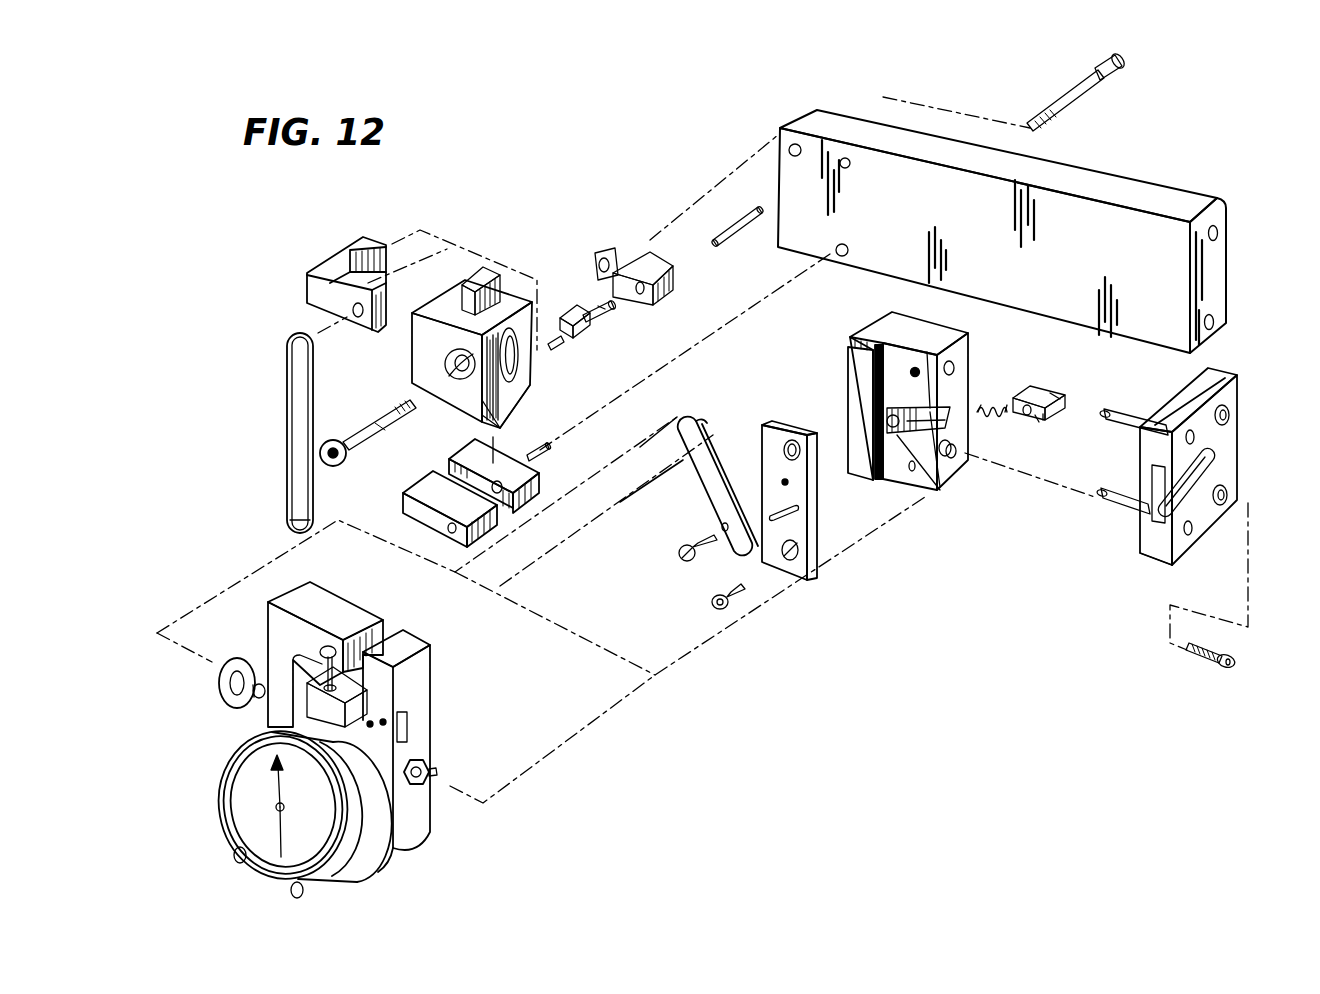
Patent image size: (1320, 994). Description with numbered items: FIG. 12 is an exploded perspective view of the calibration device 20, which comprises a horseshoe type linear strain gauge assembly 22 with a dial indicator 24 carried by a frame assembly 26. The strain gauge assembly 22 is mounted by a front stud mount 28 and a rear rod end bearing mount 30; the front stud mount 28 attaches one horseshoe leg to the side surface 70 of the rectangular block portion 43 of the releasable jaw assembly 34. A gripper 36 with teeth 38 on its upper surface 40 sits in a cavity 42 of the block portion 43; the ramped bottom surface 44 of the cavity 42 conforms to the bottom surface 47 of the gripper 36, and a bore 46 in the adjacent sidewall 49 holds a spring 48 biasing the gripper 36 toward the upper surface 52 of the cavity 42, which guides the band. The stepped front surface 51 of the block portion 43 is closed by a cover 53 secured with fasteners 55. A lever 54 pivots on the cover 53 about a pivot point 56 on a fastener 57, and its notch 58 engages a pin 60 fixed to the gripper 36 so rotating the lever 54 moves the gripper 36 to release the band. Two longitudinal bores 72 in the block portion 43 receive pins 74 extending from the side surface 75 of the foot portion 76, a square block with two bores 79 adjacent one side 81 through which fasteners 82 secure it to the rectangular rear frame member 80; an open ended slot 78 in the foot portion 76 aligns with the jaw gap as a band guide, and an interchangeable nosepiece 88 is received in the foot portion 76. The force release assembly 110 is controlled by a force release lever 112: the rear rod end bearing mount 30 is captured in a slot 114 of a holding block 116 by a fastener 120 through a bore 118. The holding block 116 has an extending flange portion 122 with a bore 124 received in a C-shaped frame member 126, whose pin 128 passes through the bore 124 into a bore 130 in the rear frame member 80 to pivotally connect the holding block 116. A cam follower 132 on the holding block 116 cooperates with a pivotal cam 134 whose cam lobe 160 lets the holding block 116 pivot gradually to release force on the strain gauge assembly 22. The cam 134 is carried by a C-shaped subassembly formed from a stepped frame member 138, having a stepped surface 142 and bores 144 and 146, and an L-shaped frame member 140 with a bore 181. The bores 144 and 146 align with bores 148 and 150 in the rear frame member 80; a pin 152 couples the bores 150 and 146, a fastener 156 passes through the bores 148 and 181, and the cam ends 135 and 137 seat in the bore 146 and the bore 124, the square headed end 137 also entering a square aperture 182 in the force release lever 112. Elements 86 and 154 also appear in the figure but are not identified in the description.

The calibration device 20 is at (1115, 120).
The strain gauge assembly 22 is at (345, 610).
The dial indicator 24 is at (258, 862).
The frame assembly 26 is at (1086, 160).
The front stud mount 28 is at (432, 775).
The rear rod end bearing mount 30 is at (220, 690).
The releasable jaw assembly 34 is at (923, 537).
The gripper 36 is at (1037, 424).
The teeth 38 is at (1057, 397).
The upper surface 40 is at (1047, 414).
The cavity 42 is at (946, 458).
The block portion 43 is at (904, 406).
The bottom surface 44 is at (907, 440).
The bore 46 is at (888, 416).
The bottom surface 47 is at (1043, 420).
The spring 48 is at (994, 407).
The sidewall 49 is at (863, 470).
The front surface 51 is at (893, 470).
The upper surface 52 is at (919, 370).
The cover 53 is at (773, 522).
The lever 54 is at (705, 508).
The fasteners 55 is at (713, 606).
The pivot point 56 is at (780, 490).
The fastener 57 is at (678, 556).
The notch 58 is at (728, 550).
The pin 60 is at (1023, 416).
The side surface 70 is at (857, 363).
The longitudinal bores 72 is at (955, 366).
The pins 74 is at (1122, 420).
The side surface 75 is at (1182, 392).
The foot portion 76 is at (1184, 469).
The open ended slot 78 is at (1150, 488).
The bores 79 is at (1230, 408).
The rear frame member 80 is at (997, 260).
The side 81 is at (1215, 455).
The fasteners 82 is at (1205, 665).
The block 86 is at (405, 640).
The interchangeable nosepiece 88 is at (1170, 562).
The force release assembly 110 is at (272, 452).
The force release lever 112 is at (290, 524).
The slot 114 is at (514, 356).
The holding block 116 is at (473, 325).
The bore 118 is at (460, 378).
The fastener 120 is at (348, 452).
The extending flange portion 122 is at (512, 378).
The bore 124 is at (498, 425).
The C-shaped frame member 126 is at (413, 522).
The pin 128 is at (548, 452).
The bore 130 is at (848, 250).
The cam follower 132 is at (475, 283).
The cam 134 is at (580, 296).
The end 135 is at (600, 303).
The end 137 is at (560, 346).
The frame member 138 is at (653, 261).
The L-shaped frame member 140 is at (315, 260).
The stepped surface 142 is at (603, 230).
The bore 144 is at (628, 195).
The bore 146 is at (642, 295).
The bore 148 is at (790, 150).
The bore 150 is at (845, 158).
The pin 152 is at (732, 247).
The hole 154 is at (352, 312).
The fastener 156 is at (1060, 100).
The cam lobe 160 is at (560, 313).
The bore 181 is at (378, 238).
The square aperture 182 is at (265, 434).